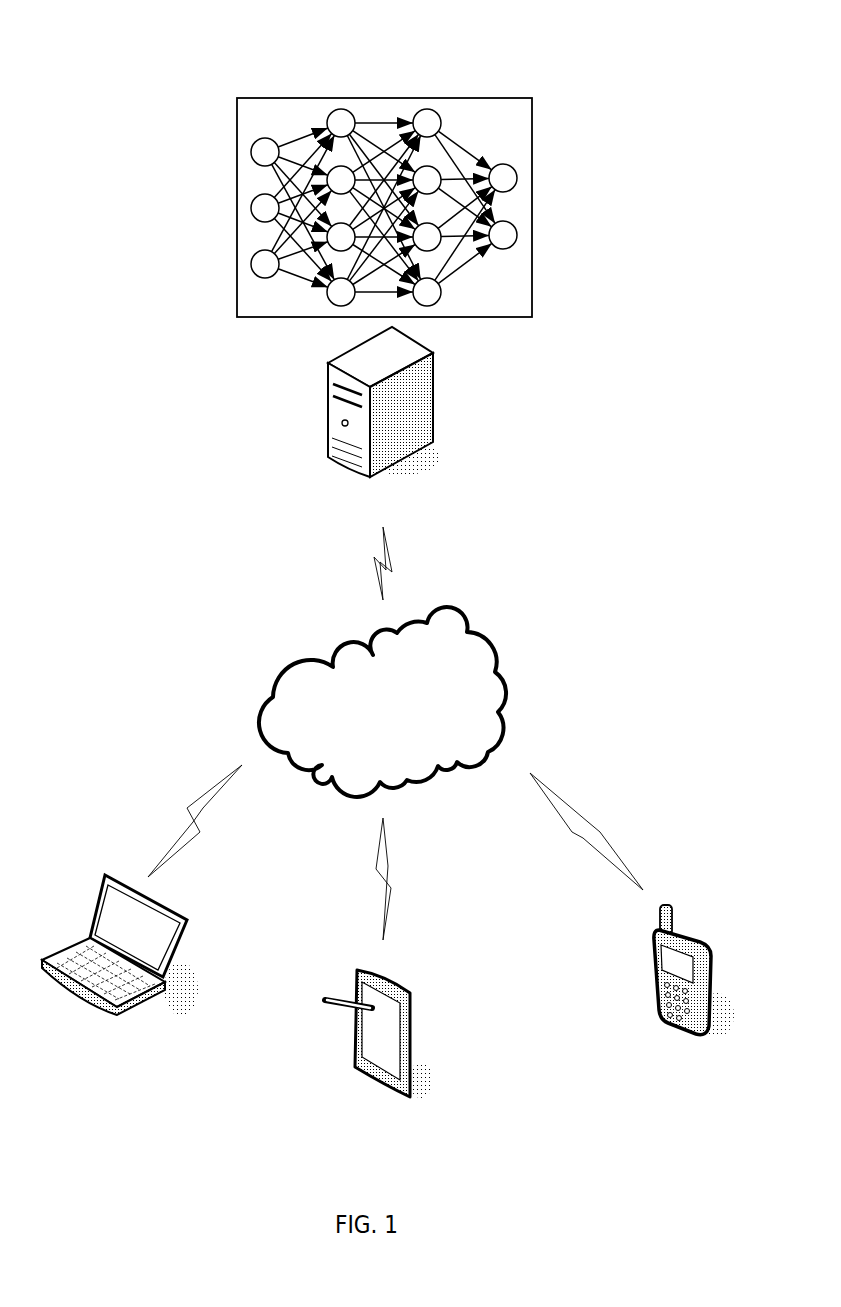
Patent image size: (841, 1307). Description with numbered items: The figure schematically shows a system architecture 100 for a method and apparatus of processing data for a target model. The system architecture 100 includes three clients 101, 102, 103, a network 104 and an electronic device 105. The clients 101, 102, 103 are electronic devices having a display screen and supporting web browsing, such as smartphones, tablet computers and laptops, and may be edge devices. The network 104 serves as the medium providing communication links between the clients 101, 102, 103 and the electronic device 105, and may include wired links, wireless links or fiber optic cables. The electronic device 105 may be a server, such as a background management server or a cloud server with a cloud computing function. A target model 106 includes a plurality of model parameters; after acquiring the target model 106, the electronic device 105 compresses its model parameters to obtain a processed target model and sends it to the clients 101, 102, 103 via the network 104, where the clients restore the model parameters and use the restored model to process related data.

The system architecture 100 is at (130, 31).
The client 101 is at (673, 979).
The client 102 is at (375, 1040).
The client 103 is at (120, 960).
The network 104 is at (382, 702).
The electronic device 105 is at (384, 425).
The target model 106 is at (382, 98).